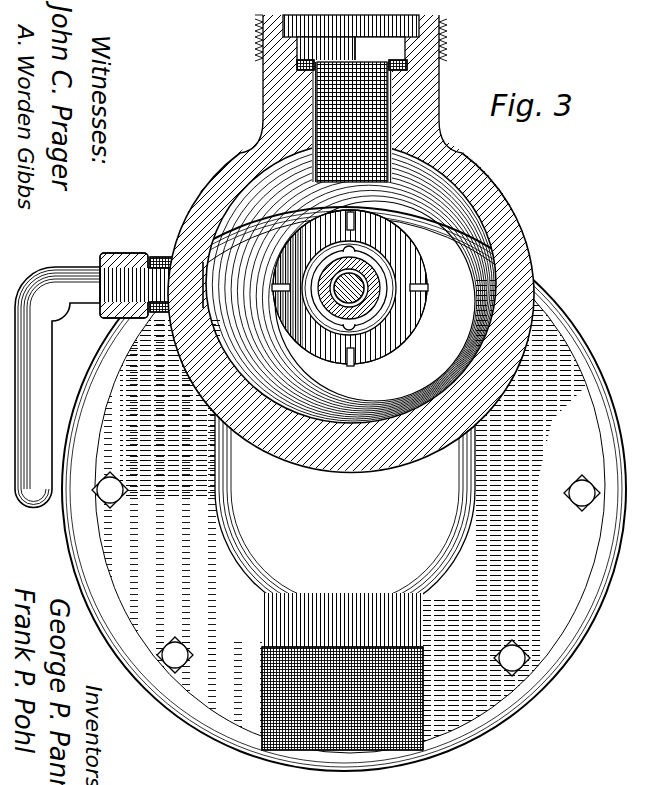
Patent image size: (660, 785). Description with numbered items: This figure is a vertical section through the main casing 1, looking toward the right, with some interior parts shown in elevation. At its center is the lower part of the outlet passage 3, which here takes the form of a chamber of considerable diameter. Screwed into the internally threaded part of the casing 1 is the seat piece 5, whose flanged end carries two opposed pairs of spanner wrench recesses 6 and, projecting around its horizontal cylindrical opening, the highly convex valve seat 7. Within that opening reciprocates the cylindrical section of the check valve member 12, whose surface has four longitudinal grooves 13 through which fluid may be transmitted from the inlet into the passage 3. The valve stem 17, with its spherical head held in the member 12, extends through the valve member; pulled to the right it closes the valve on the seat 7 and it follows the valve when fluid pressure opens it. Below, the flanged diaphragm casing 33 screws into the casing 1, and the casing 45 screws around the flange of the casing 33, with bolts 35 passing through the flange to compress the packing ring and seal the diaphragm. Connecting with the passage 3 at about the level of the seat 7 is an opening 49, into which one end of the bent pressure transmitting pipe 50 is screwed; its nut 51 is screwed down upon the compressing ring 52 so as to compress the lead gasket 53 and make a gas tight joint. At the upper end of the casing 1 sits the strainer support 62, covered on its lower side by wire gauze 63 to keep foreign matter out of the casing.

The main casing 1 is at (231, 160).
The outlet passage 3 is at (436, 203).
The seat piece 5 is at (394, 237).
The spanner wrench recesses 6 is at (426, 288).
The valve seat 7 is at (384, 281).
The check valve member 12 is at (372, 303).
The longitudinal grooves 13 is at (351, 252).
The valve stem 17 is at (366, 279).
The diaphragm casing 33 is at (344, 565).
The bolts 35 is at (112, 495).
The casing 45 is at (568, 333).
The opening 49 is at (199, 268).
The pressure transmitting pipe 50 is at (66, 270).
The nut 51 is at (117, 318).
The compressing ring 52 is at (160, 262).
The gasket 53 is at (173, 258).
The strainer support 62 is at (300, 64).
The wire gauze 63 is at (345, 108).